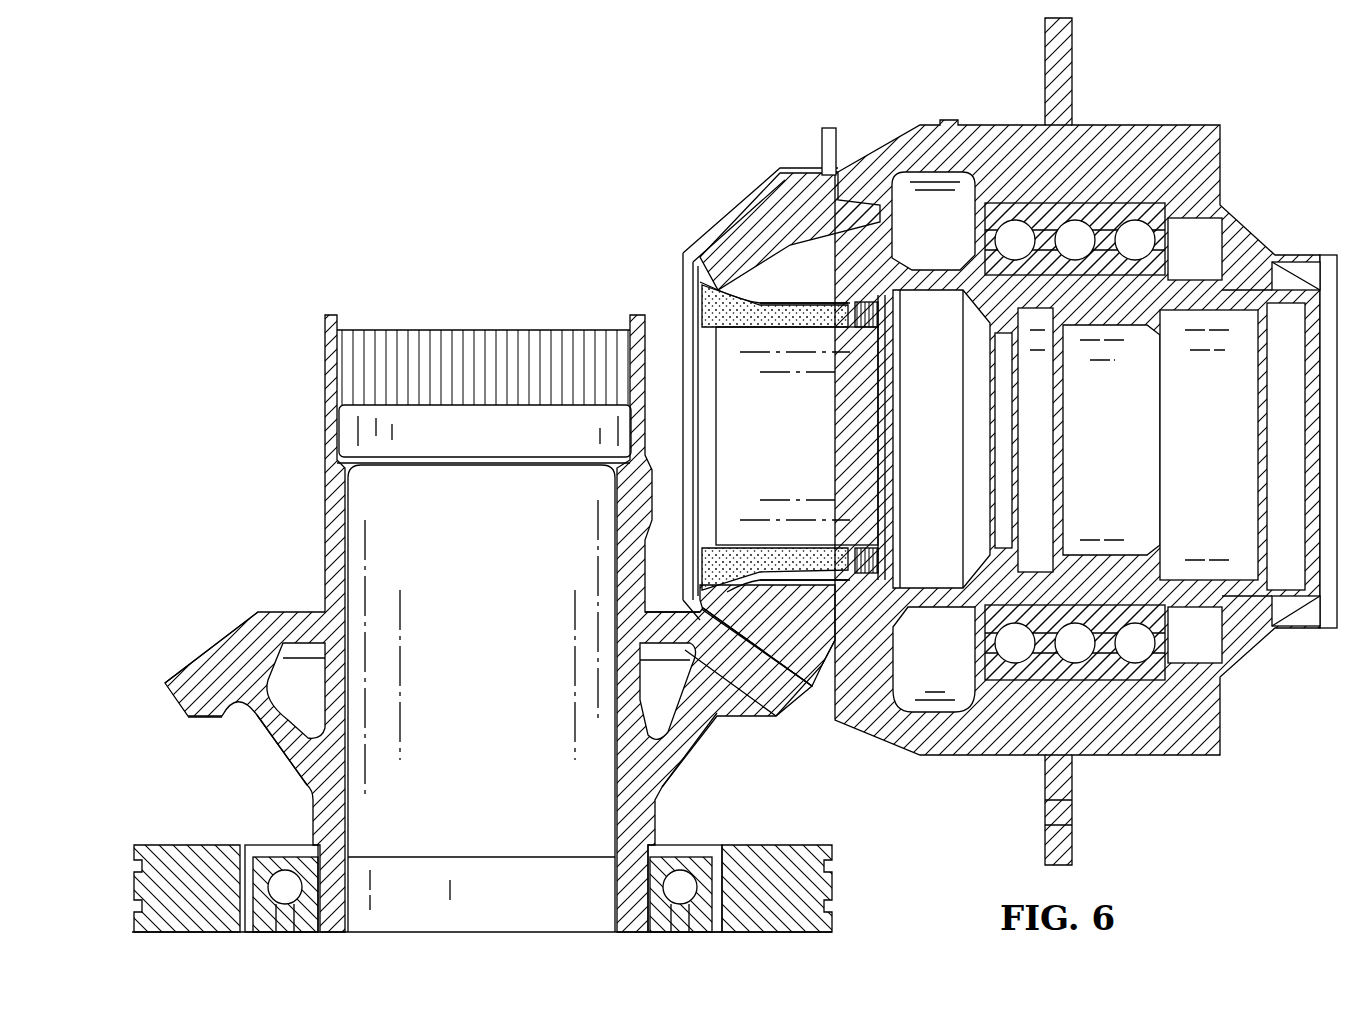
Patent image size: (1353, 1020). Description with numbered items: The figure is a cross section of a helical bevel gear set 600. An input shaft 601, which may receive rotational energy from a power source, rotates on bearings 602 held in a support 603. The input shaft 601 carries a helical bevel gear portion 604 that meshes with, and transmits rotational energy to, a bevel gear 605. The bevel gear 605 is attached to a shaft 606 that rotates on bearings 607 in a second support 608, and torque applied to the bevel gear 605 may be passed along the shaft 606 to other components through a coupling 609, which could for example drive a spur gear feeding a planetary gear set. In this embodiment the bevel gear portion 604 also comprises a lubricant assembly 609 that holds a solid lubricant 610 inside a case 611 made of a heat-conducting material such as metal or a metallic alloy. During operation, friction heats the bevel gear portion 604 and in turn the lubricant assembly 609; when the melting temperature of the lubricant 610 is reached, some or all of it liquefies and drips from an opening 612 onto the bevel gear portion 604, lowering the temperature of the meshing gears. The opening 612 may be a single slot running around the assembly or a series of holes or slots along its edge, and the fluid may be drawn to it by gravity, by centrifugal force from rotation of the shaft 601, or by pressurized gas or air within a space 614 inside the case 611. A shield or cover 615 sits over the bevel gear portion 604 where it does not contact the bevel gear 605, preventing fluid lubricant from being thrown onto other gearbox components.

The helical bevel gear set 600 is at (320, 100).
The input shaft 601 is at (1222, 288).
The bearings 602 is at (998, 240).
The support 603 is at (1115, 130).
The helical bevel gear portion 604 is at (768, 210).
The bevel gear 605 is at (207, 658).
The shaft 606 is at (337, 548).
The bearings 607 is at (285, 882).
The support 608 is at (195, 855).
The lubricant assembly 609 is at (458, 330).
The solid lubricant 610 is at (710, 303).
The case 611 is at (806, 335).
The opening 612 is at (722, 257).
The space 614 is at (867, 547).
The shield or cover 615 is at (807, 177).